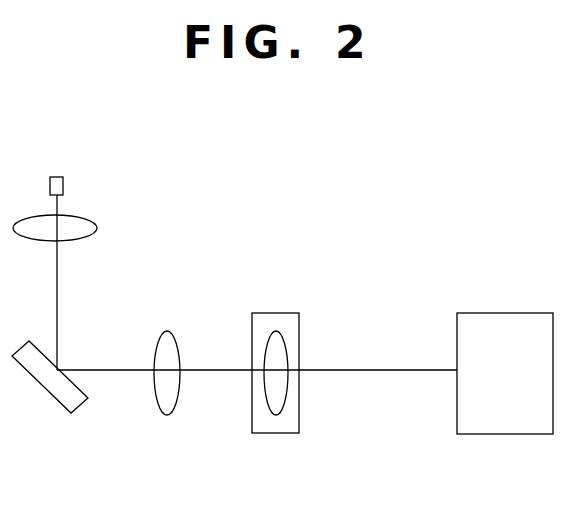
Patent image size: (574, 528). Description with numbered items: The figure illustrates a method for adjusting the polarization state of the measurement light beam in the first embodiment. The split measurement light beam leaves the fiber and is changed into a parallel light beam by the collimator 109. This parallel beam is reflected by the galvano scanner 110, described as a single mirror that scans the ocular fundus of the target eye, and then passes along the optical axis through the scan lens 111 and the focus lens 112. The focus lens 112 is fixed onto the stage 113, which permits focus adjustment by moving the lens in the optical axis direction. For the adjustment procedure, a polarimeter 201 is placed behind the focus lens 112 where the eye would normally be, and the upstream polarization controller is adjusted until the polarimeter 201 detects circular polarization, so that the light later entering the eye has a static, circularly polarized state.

The collimator 109 is at (97, 228).
The galvano scanner 110 is at (79, 412).
The scan lens 111 is at (175, 400).
The focus lens 112 is at (276, 331).
The stage 113 is at (288, 433).
The polarimeter 201 is at (533, 313).